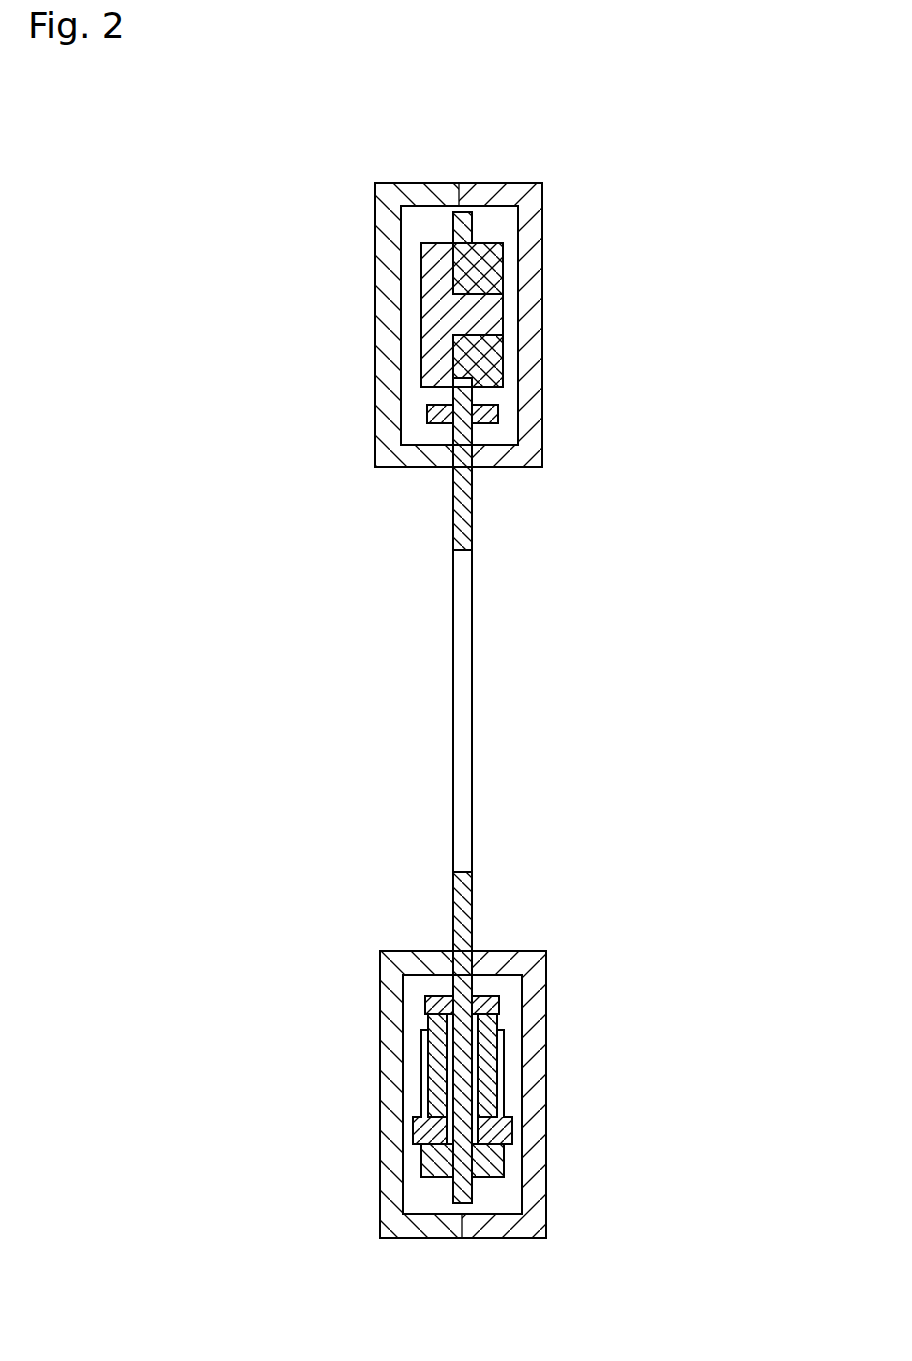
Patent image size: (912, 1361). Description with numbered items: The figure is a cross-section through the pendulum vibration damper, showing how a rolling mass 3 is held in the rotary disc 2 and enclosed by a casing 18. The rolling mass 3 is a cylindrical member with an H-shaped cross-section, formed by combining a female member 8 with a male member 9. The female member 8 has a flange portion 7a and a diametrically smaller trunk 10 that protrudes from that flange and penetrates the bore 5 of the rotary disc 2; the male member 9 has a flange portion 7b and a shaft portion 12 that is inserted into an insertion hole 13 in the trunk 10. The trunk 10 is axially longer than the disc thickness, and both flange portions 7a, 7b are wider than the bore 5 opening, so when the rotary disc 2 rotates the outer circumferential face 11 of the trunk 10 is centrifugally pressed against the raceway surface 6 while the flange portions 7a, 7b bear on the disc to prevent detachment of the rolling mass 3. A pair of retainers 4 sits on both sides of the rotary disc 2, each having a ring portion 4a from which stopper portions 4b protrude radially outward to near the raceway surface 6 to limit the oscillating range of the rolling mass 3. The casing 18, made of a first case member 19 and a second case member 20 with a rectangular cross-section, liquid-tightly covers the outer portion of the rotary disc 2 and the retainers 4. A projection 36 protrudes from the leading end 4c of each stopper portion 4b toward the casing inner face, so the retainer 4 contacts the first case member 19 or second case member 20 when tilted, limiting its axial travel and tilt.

The rotary disc 2 is at (463, 508).
The rolling mass 3 is at (497, 231).
The retainer 4 is at (490, 413).
The ring portion 4a is at (435, 997).
The stopper portion 4b is at (492, 1020).
The leading end 4c is at (417, 1150).
The bore 5 is at (445, 385).
The raceway surface 6 is at (470, 265).
The flange portion 7a is at (480, 380).
The flange portion 7b is at (440, 362).
The female member 8 is at (539, 351).
The male member 9 is at (400, 315).
The trunk 10 is at (483, 352).
The outer circumferential face 11 is at (468, 392).
The shaft portion 12 is at (450, 311).
The insertion hole 13 is at (508, 303).
The casing 18 is at (458, 715).
The first case member 19 is at (440, 193).
The second case member 20 is at (443, 143).
The projection 36 is at (413, 1128).